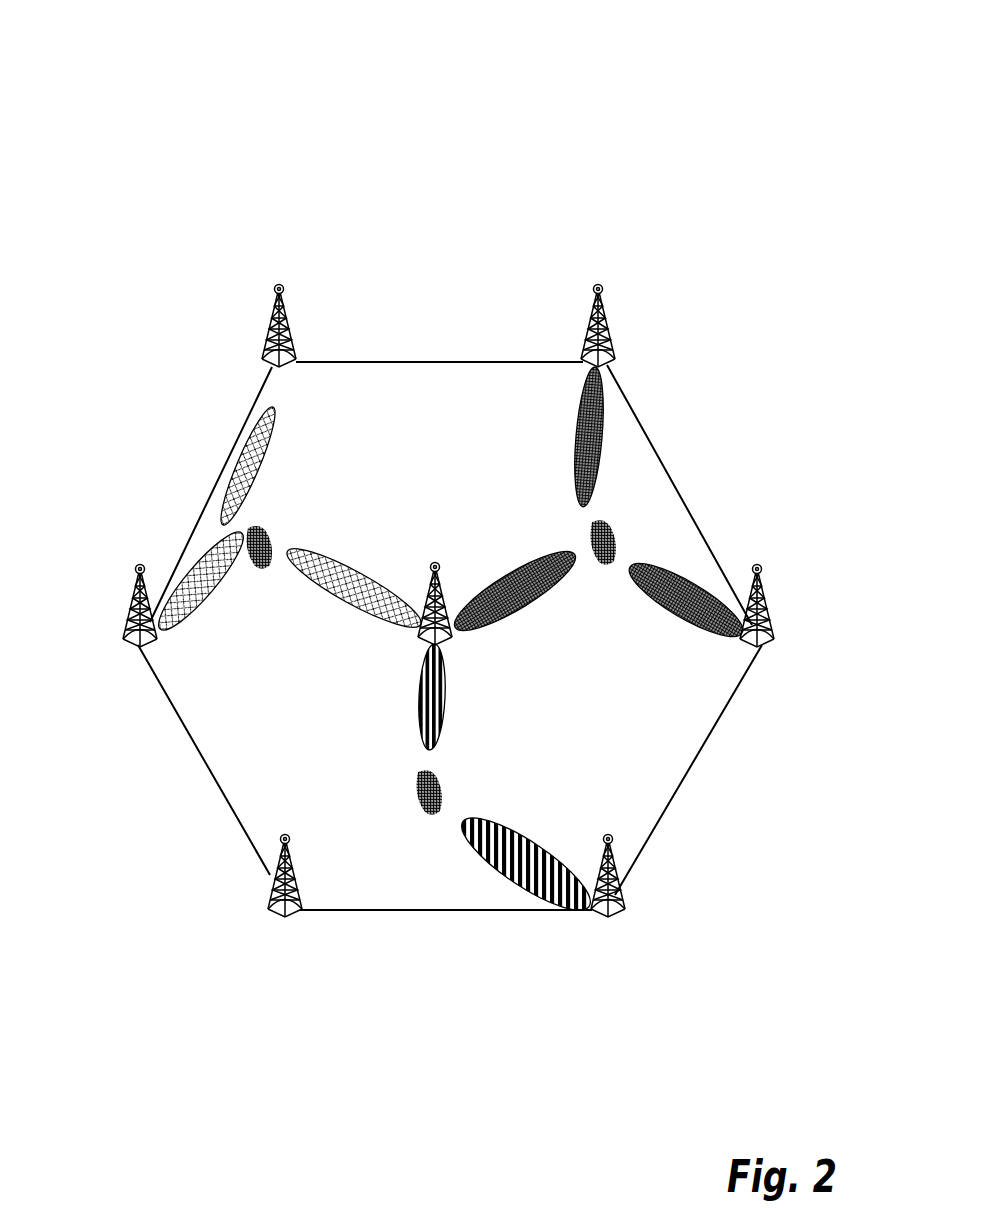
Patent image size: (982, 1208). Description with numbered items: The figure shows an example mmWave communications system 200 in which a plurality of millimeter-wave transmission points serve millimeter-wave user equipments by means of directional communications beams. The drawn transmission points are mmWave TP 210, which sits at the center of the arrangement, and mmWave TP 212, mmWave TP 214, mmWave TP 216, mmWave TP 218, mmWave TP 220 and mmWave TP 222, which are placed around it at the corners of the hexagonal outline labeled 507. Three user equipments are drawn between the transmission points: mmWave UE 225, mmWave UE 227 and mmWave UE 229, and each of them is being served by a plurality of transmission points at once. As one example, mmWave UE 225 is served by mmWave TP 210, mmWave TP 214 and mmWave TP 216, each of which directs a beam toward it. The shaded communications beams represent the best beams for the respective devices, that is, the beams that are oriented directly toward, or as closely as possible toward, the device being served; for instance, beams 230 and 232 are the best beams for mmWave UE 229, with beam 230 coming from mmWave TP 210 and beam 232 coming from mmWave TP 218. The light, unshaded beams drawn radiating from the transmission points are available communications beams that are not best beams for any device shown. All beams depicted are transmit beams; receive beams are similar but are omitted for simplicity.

The mmWave communications system 200 is at (116, 42).
The mmWave TP 210 is at (455, 629).
The mmWave TP 212 is at (292, 331).
The mmWave TP 214 is at (607, 318).
The mmWave TP 216 is at (767, 591).
The mmWave TP 218 is at (622, 897).
The mmWave TP 220 is at (295, 878).
The mmWave TP 222 is at (130, 606).
The mmWave UE 225 is at (630, 521).
The mmWave UE 227 is at (280, 524).
The mmWave UE 229 is at (452, 790).
The beam 230 is at (421, 718).
The beam 232 is at (480, 846).
The cell cluster hexagon 507 is at (450, 636).